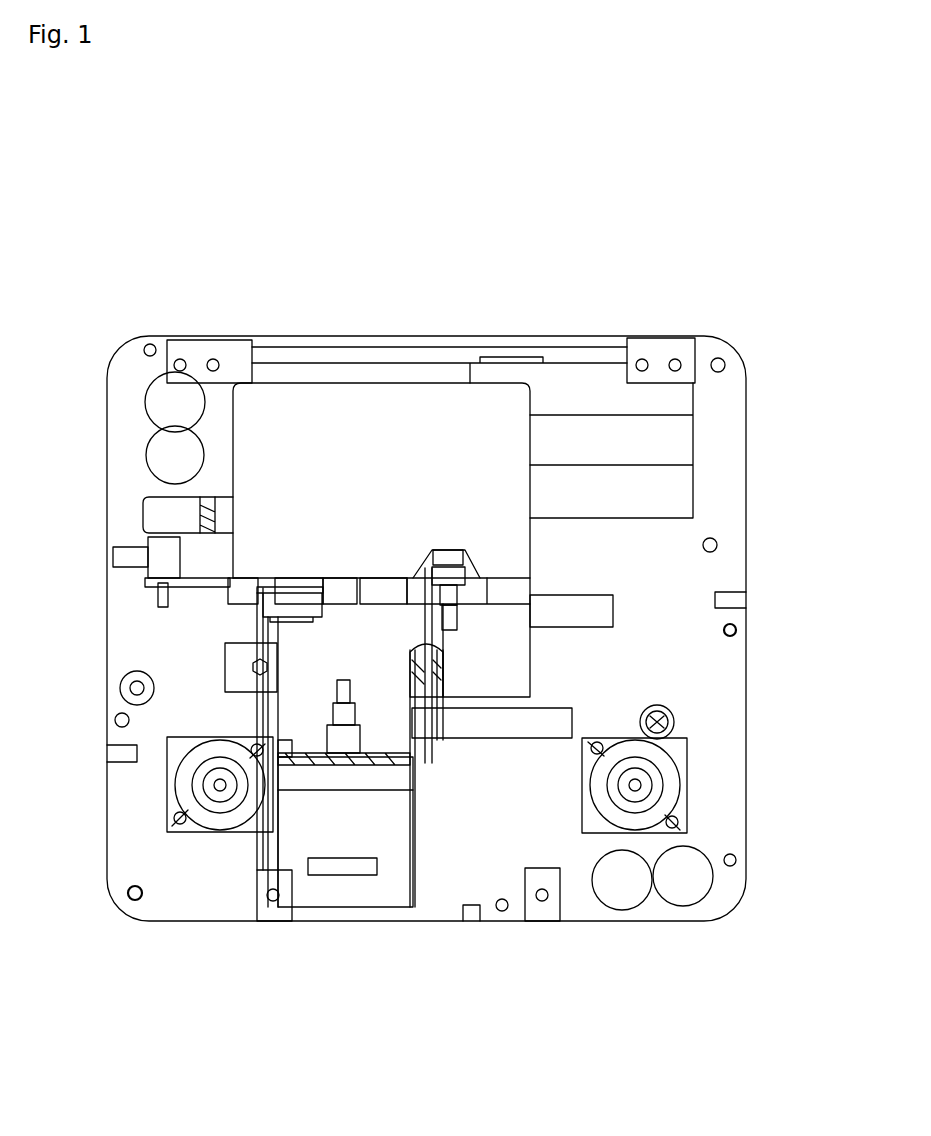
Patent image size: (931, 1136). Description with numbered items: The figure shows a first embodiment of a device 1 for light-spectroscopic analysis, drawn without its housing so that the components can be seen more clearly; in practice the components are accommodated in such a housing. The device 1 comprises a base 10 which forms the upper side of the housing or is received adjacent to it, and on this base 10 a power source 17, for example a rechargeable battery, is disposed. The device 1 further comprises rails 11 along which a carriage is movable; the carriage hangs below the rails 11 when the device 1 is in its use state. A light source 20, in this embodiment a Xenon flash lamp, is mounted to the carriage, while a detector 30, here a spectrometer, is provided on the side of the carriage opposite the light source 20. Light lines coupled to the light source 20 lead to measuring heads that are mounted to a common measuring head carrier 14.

The device 1 is at (585, 297).
The base 10 is at (714, 344).
The rails 11 is at (598, 610).
The measuring head carrier 14 is at (237, 675).
The power source 17 is at (687, 485).
The light source 20 is at (380, 905).
The detector 30 is at (382, 403).